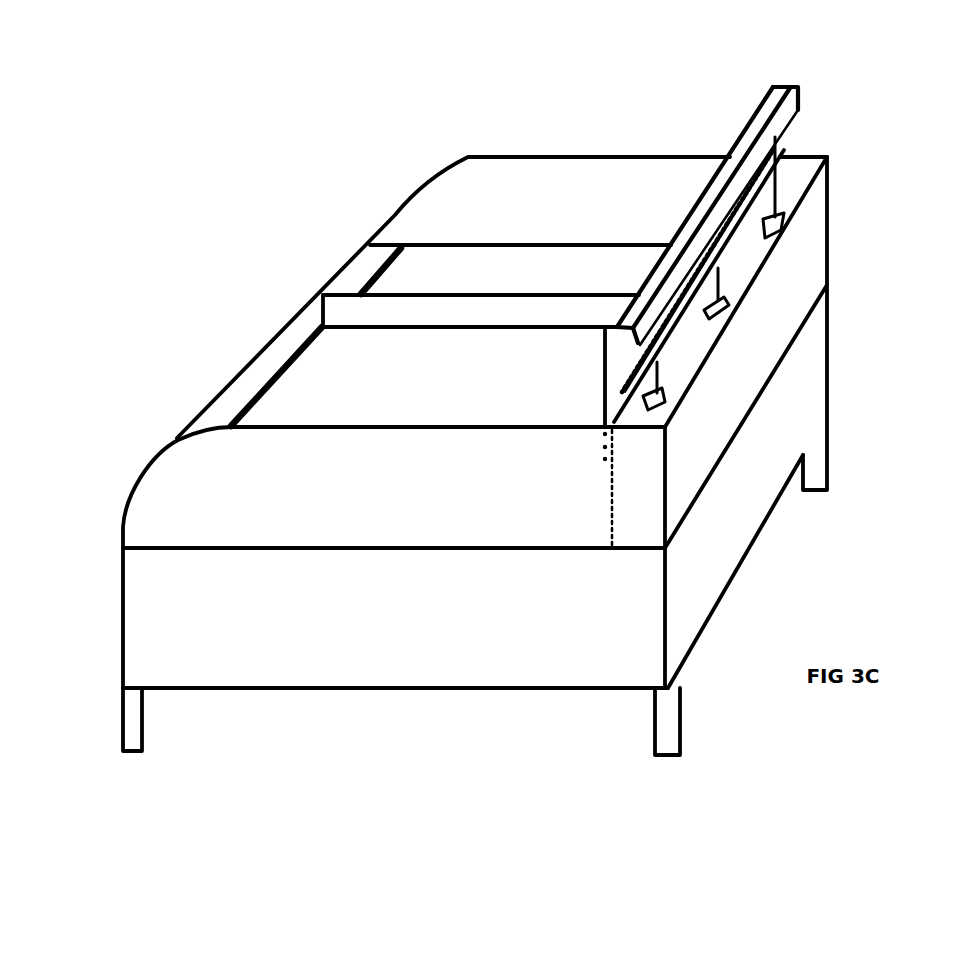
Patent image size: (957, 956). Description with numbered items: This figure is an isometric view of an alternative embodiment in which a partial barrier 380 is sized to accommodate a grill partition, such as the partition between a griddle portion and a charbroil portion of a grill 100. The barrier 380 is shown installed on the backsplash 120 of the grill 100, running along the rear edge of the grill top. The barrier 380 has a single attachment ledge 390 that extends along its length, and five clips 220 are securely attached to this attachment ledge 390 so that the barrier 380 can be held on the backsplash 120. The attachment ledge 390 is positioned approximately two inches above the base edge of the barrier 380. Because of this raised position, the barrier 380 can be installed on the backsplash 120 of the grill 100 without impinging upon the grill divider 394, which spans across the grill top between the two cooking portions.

The grill 100 is at (507, 130).
The backsplash 120 is at (740, 270).
The clips 220 is at (776, 215).
The barrier 380 is at (701, 198).
The attachment ledge 390 is at (781, 152).
The grill divider 394 is at (322, 300).